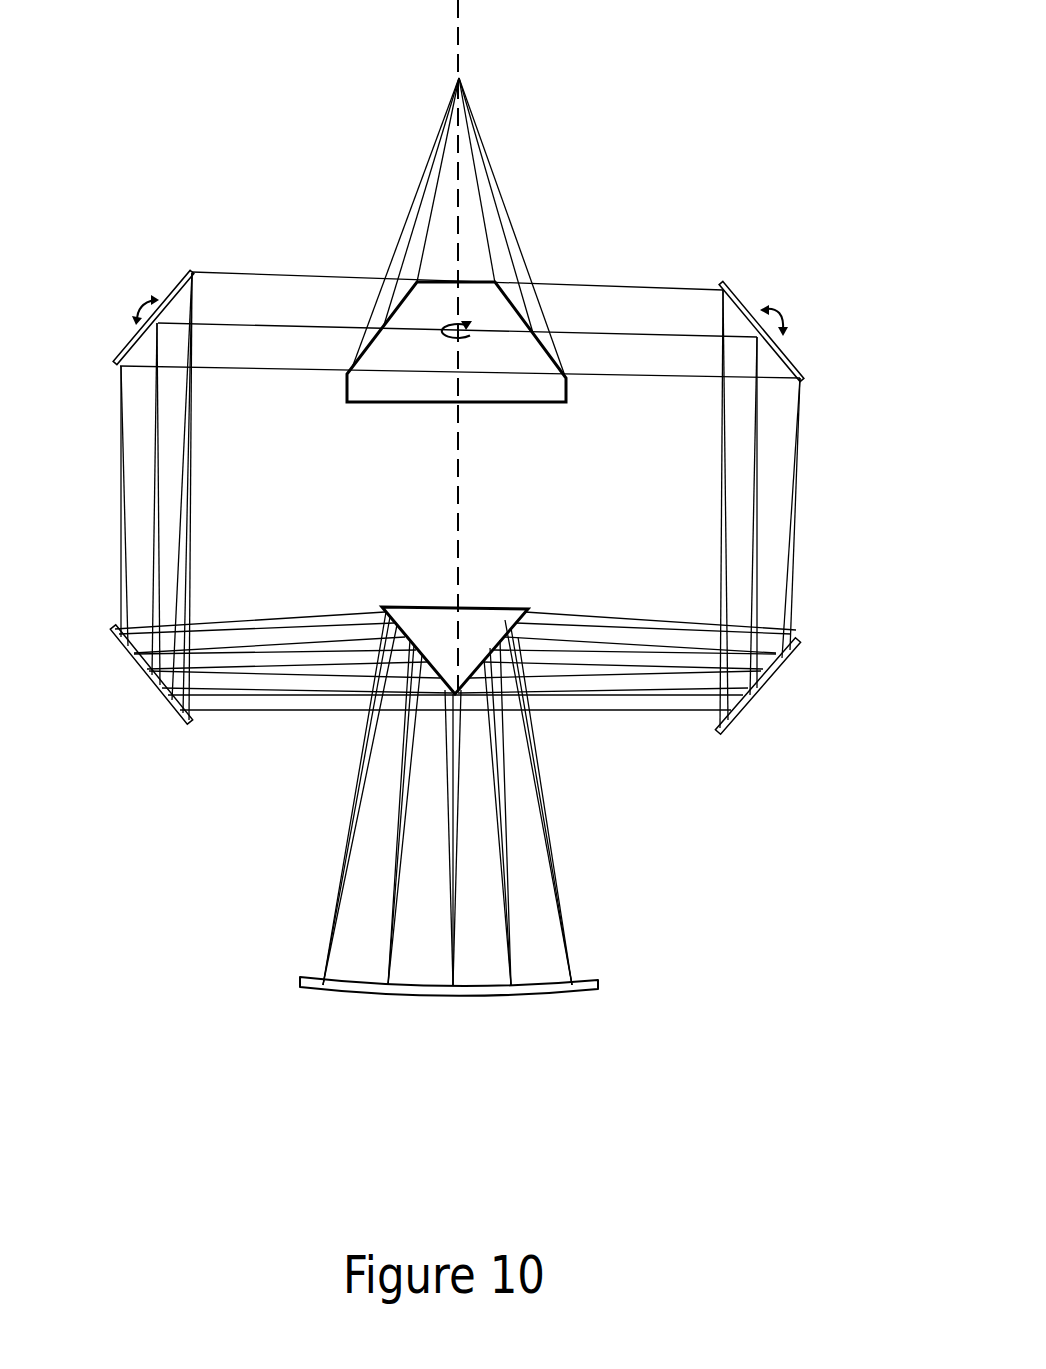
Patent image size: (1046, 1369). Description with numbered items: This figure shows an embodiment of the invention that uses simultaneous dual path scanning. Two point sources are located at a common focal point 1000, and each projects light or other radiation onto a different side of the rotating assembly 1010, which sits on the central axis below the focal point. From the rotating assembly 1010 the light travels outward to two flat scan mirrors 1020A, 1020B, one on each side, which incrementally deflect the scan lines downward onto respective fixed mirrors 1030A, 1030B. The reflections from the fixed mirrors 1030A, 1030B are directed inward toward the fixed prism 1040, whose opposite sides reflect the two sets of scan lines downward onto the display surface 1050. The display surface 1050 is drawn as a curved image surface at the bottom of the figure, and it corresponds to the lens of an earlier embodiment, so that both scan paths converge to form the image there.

The common focal point 1000 is at (458, 217).
The rotating assembly 1010 is at (456, 382).
The flat scan mirror 1020A is at (111, 315).
The flat scan mirror 1020B is at (807, 331).
The fixed mirror 1030A is at (111, 681).
The fixed mirror 1030B is at (800, 692).
The fixed prism 1040 is at (455, 616).
The display surface 1050 is at (540, 1023).